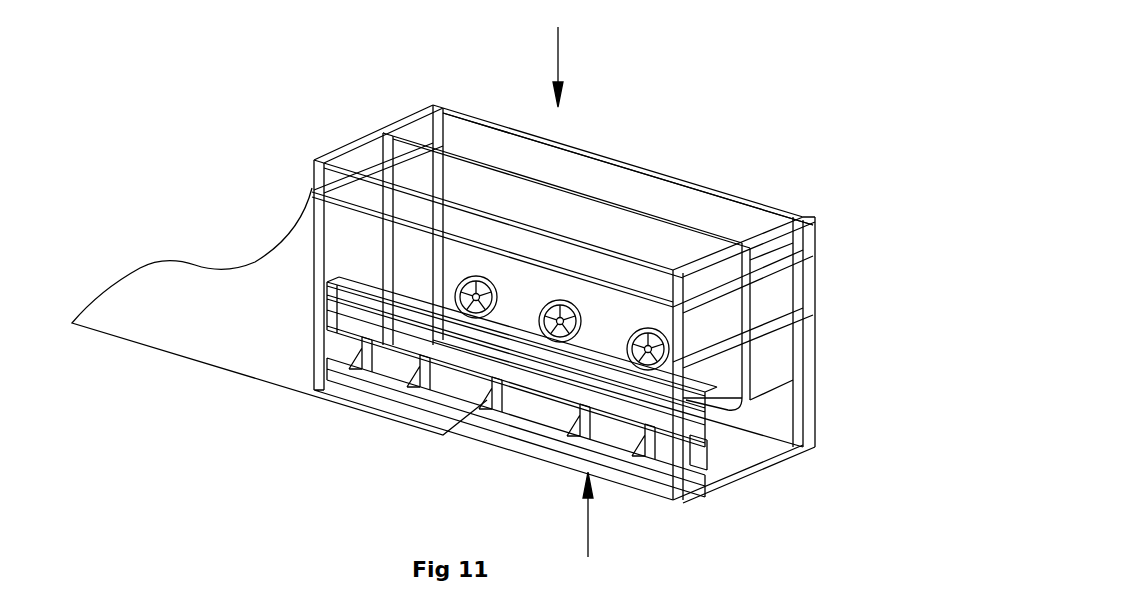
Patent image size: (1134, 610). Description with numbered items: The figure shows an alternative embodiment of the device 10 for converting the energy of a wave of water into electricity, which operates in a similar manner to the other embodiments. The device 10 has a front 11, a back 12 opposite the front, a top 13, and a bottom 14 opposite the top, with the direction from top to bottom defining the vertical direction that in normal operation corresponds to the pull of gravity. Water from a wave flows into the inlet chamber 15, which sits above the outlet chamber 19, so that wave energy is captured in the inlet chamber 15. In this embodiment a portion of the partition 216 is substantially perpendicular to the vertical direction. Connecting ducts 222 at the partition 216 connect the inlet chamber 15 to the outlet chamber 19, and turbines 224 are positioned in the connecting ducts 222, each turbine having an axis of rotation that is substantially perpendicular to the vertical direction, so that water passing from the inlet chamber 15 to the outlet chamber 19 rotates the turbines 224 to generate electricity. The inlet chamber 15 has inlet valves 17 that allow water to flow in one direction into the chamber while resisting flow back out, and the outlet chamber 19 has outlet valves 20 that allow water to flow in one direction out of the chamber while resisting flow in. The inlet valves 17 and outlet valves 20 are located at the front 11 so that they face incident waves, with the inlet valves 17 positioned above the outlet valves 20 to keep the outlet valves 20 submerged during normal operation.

The device 10 is at (745, 120).
The front 11 is at (272, 287).
The back 12 is at (880, 212).
The top 13 is at (571, 61).
The bottom 14 is at (600, 522).
The inlet chamber 15 is at (703, 368).
The inlet valves 17 is at (350, 307).
The outlet chamber 19 is at (772, 407).
The outlet valves 20 is at (340, 368).
The partition 216 is at (738, 335).
The connecting ducts 222 is at (637, 375).
The turbines 224 is at (650, 340).